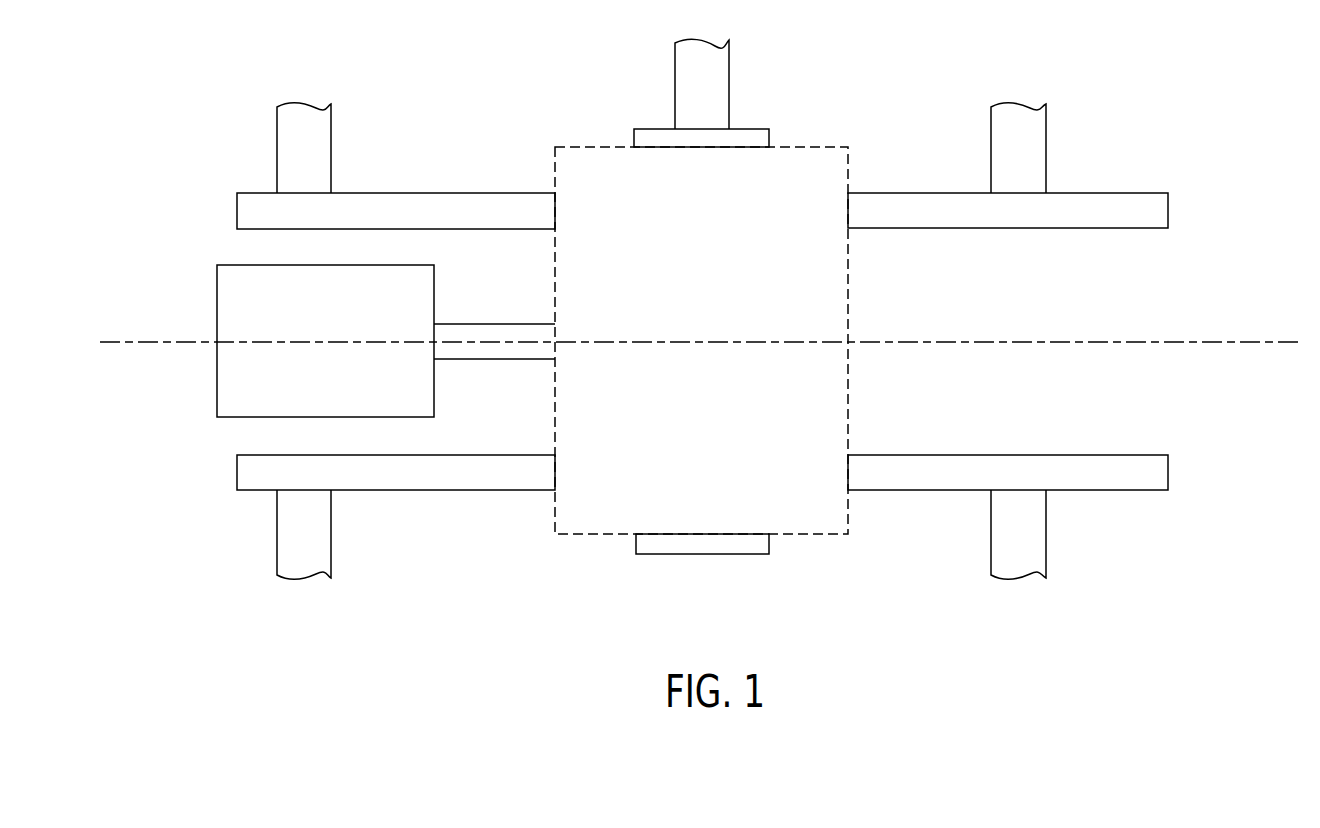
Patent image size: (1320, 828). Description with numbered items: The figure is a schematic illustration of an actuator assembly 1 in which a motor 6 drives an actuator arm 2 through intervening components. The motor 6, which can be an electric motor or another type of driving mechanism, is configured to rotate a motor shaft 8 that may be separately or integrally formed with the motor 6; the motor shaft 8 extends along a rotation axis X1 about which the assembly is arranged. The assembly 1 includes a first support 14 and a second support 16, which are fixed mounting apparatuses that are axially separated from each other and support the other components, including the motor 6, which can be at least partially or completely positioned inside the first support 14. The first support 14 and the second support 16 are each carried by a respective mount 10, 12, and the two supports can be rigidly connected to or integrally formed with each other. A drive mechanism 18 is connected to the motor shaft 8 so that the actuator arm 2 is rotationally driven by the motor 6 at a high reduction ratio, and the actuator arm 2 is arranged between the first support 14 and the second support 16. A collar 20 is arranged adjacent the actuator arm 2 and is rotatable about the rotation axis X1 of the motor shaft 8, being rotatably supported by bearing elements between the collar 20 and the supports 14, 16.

The actuator assembly 1 is at (898, 118).
The actuator arm 2 is at (729, 73).
The motor 6 is at (228, 288).
The motor shaft 8 is at (480, 322).
The mount 10 is at (331, 155).
The mount 12 is at (1046, 157).
The first support 14 is at (463, 193).
The second support 16 is at (930, 229).
The drive mechanism 18 is at (797, 163).
The collar 20 is at (650, 127).
The rotation axis X1 is at (1100, 340).